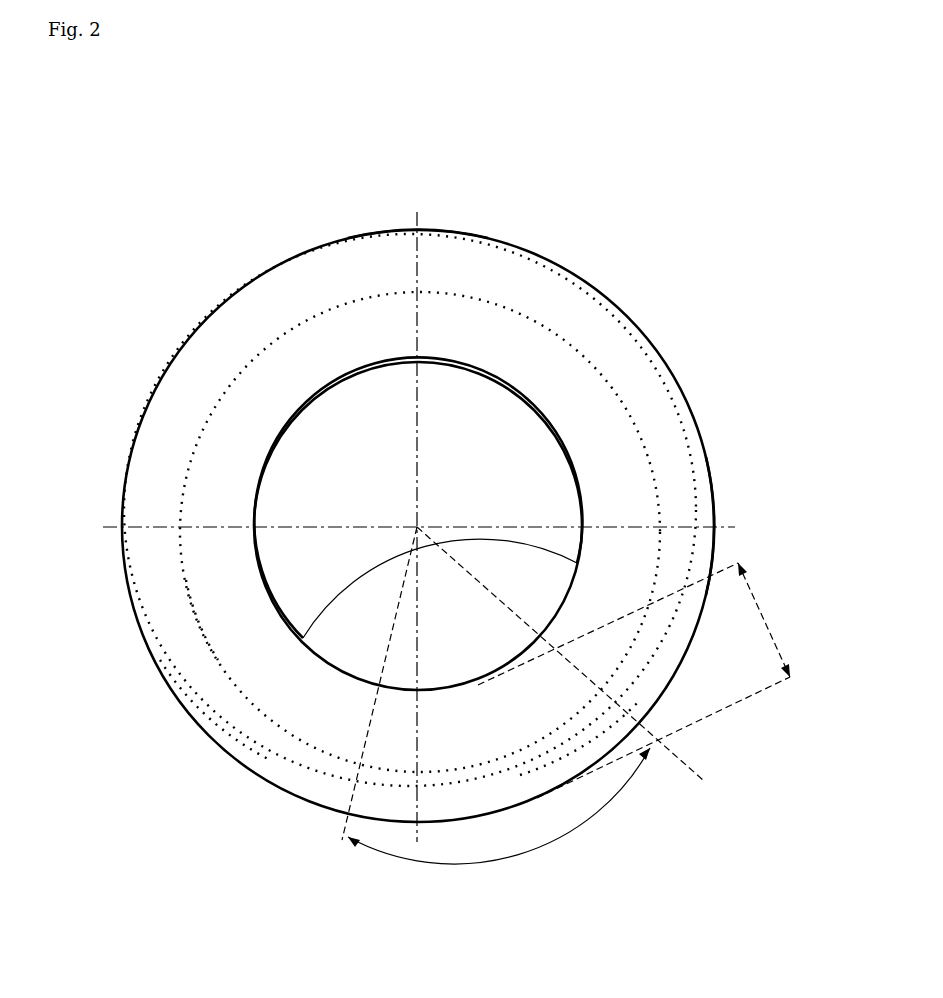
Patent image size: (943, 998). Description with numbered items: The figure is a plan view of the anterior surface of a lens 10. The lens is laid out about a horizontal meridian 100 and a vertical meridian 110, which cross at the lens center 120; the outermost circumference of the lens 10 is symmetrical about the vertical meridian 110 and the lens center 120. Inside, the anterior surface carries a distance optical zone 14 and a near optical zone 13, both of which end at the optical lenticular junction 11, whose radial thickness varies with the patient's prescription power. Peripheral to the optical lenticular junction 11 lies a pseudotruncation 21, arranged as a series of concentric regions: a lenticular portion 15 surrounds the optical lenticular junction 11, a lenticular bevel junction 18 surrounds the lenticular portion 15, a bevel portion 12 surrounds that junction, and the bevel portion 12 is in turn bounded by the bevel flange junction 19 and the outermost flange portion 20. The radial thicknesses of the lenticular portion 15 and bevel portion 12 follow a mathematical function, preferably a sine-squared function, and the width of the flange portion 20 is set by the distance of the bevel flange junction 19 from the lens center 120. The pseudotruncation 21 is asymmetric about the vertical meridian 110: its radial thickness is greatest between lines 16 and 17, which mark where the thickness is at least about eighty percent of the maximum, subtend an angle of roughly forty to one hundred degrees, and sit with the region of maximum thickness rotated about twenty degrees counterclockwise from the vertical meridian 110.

The lens 10 is at (598, 291).
The horizontal meridian 100 is at (716, 507).
The vertical meridian 110 is at (417, 223).
The lens center 120 is at (415, 526).
The optical lenticular junction 11 is at (265, 447).
The bevel portion 12 is at (197, 667).
The near optical zone 13 is at (520, 597).
The distance optical zone 14 is at (487, 440).
The lenticular portion 15 is at (278, 359).
The line 16 is at (340, 820).
The line 17 is at (683, 755).
The lenticular bevel junction 18 is at (190, 618).
The bevel flange junction 19 is at (218, 730).
The flange portion 20 is at (567, 750).
The pseudotruncation 21 is at (636, 680).